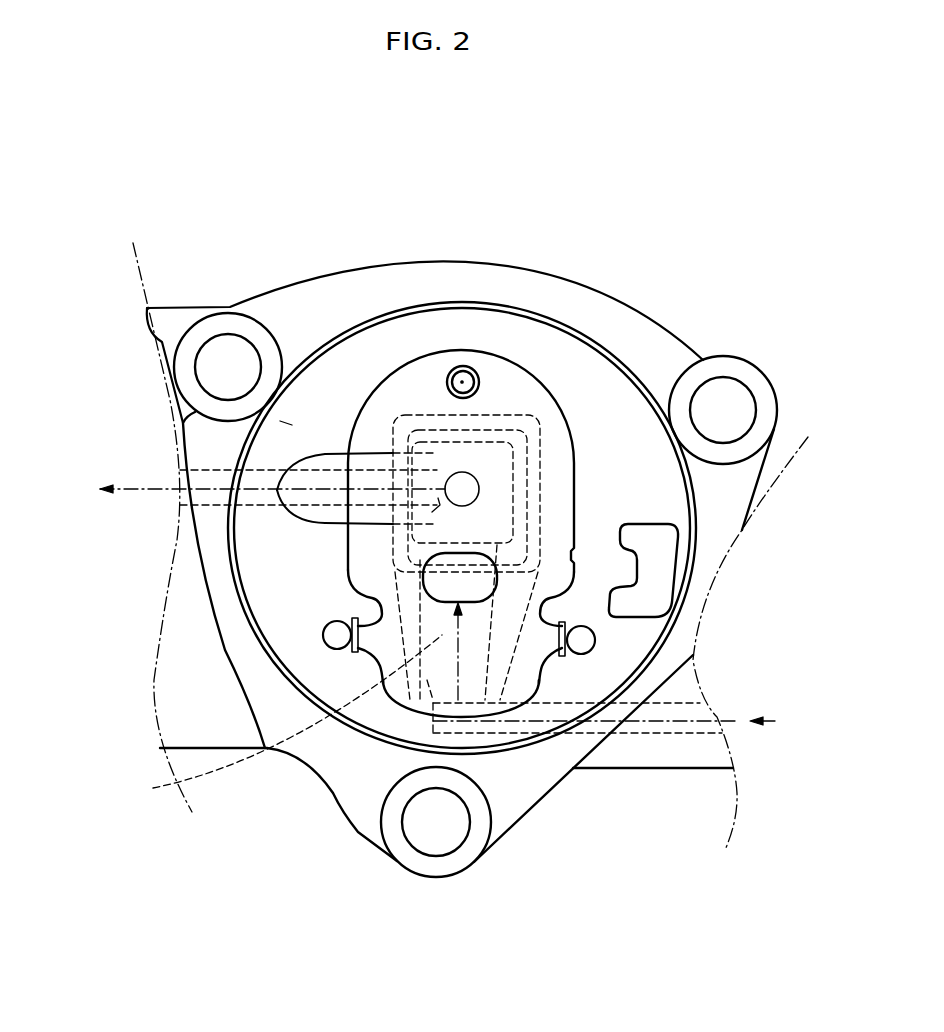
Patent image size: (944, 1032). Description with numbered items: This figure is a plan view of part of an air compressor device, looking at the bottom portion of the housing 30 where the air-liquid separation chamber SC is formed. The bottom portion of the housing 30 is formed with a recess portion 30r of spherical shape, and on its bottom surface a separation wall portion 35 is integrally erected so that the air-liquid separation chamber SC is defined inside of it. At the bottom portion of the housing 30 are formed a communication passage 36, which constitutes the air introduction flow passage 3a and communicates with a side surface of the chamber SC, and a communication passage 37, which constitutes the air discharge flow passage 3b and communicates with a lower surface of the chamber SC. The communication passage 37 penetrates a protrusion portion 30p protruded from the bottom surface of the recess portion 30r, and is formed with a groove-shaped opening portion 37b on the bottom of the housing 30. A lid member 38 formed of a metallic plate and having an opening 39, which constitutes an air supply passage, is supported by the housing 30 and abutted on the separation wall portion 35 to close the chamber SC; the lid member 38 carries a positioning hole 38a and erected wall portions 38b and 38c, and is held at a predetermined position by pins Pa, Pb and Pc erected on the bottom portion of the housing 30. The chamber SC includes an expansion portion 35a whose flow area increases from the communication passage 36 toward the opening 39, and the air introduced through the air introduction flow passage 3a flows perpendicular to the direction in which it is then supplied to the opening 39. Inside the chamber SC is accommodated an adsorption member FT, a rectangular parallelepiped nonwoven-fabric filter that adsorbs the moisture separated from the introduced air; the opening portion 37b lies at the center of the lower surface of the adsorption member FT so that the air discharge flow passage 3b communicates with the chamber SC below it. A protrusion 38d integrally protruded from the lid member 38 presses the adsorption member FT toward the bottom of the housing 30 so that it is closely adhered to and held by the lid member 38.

The housing 30 is at (345, 276).
The recess portion 30r is at (288, 423).
The protrusion portion 30p is at (313, 461).
The air introduction flow passage 3a is at (629, 723).
The air discharge flow passage 3b is at (251, 491).
The separation wall portion 35 is at (403, 540).
The expansion portion 35a is at (433, 680).
The communication passage 36 is at (680, 737).
The communication passage 37 is at (272, 496).
The opening portion 37b is at (437, 507).
The lid member 38 is at (648, 315).
The positioning hole 38a is at (472, 368).
The erected wall portion 38b is at (375, 594).
The erected wall portion 38c is at (568, 620).
The protrusion 38d is at (483, 490).
The opening 39 is at (437, 590).
The adsorption member FT is at (492, 466).
The pin Pa is at (461, 380).
The pin Pb is at (337, 635).
The pin Pc is at (581, 640).
The air-liquid separation chamber SC is at (275, 718).